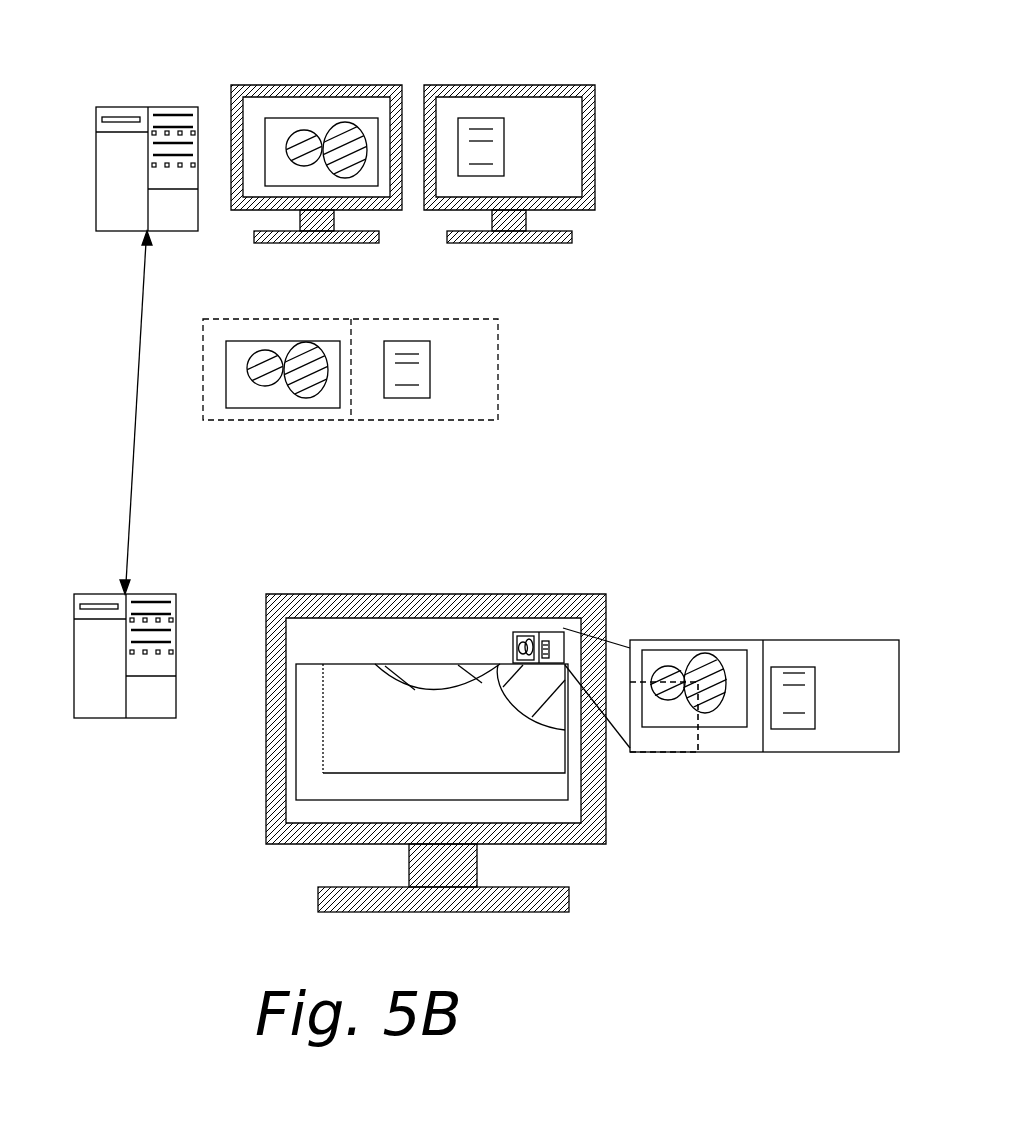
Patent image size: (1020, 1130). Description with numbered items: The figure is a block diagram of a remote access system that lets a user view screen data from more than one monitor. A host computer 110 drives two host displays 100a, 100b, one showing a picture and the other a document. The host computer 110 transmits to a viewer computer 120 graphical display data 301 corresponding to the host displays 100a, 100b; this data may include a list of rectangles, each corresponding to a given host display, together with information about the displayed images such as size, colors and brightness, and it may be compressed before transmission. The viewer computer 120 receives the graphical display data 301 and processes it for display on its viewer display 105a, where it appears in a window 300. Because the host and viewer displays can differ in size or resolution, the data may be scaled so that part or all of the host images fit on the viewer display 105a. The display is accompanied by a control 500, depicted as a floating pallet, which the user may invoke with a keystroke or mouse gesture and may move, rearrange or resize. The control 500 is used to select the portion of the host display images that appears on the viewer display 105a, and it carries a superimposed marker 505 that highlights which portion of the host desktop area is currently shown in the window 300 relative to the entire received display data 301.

The host computer 110 is at (140, 134).
The host display 100a is at (316, 134).
The host display 100b is at (509, 134).
The graphical display data 301 is at (519, 384).
The window 300 is at (342, 664).
The viewer display 105a is at (436, 722).
The control 500 is at (753, 640).
The viewer computer 120 is at (130, 698).
The marker 505 is at (657, 752).